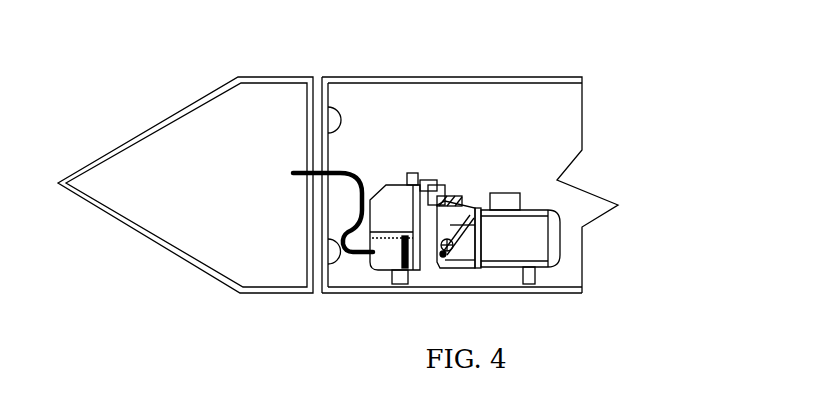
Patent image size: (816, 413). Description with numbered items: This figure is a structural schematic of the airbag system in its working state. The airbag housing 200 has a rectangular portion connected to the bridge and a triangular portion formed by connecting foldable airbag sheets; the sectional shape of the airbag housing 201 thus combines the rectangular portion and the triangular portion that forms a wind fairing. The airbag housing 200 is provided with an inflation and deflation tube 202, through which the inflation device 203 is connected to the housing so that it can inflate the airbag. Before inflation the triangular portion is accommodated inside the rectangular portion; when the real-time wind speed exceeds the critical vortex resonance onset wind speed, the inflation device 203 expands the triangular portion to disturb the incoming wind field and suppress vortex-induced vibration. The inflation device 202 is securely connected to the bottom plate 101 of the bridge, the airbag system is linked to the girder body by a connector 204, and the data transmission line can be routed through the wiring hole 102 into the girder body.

The airbag housing 200 is at (150, 187).
The airbag housing 201 is at (165, 247).
The inflation device 203 is at (297, 171).
The connector 204 is at (345, 127).
The wiring hole 102 is at (583, 83).
The bottom plate 101 is at (583, 288).
The inflation and deflation tube 202 is at (563, 242).